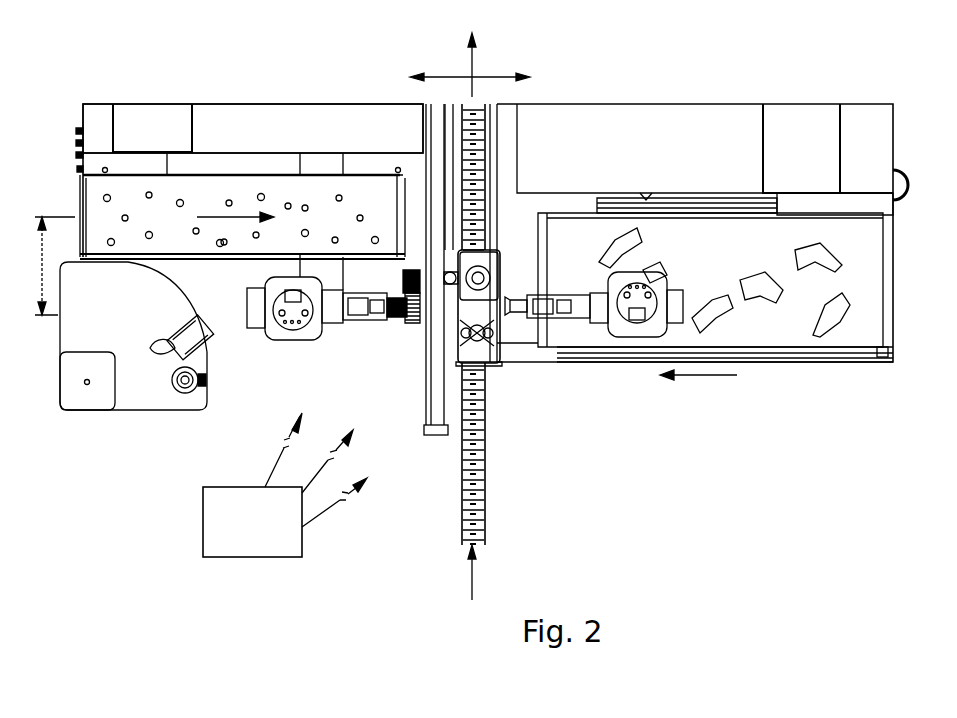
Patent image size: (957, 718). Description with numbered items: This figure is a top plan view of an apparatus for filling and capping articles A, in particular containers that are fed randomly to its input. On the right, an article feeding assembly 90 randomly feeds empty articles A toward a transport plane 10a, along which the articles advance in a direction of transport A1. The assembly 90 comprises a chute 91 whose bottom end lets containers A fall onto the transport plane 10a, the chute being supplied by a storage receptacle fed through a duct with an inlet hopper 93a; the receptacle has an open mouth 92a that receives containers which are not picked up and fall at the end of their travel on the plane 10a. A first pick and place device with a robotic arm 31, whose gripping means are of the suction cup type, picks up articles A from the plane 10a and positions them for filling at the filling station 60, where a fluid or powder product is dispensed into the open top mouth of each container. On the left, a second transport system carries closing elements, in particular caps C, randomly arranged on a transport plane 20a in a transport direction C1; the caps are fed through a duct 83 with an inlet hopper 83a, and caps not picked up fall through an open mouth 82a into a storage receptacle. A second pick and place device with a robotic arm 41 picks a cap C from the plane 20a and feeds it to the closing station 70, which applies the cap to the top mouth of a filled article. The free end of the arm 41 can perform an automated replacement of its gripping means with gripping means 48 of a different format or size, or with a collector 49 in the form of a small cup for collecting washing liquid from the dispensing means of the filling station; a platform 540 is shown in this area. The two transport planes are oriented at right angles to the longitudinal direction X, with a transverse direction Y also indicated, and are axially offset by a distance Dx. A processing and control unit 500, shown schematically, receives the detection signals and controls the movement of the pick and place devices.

The duct 83 is at (270, 122).
The inlet hopper 83a is at (143, 125).
The transport plane 20a is at (213, 192).
The transport direction C1 is at (212, 218).
The closing element C is at (220, 246).
The distance Dx is at (40, 264).
The work platform 540 is at (137, 333).
The gripping means 48 is at (150, 355).
The collector 49 is at (187, 393).
The robotic arm 41 is at (345, 323).
The open mouth 82a is at (362, 323).
The closing station 70 is at (450, 290).
The longitudinal direction X is at (482, 317).
The Y axis Y is at (471, 80).
The filling station 60 is at (490, 340).
The article feeding assembly 90 is at (718, 115).
The inlet hopper 93a is at (787, 127).
The chute 91 is at (877, 203).
The transport plane 10a is at (735, 260).
The article A is at (837, 312).
The direction of transport A1 is at (698, 388).
The robotic arm 31 is at (587, 320).
The open mouth 92a is at (525, 343).
The processing and control unit 500 is at (275, 537).